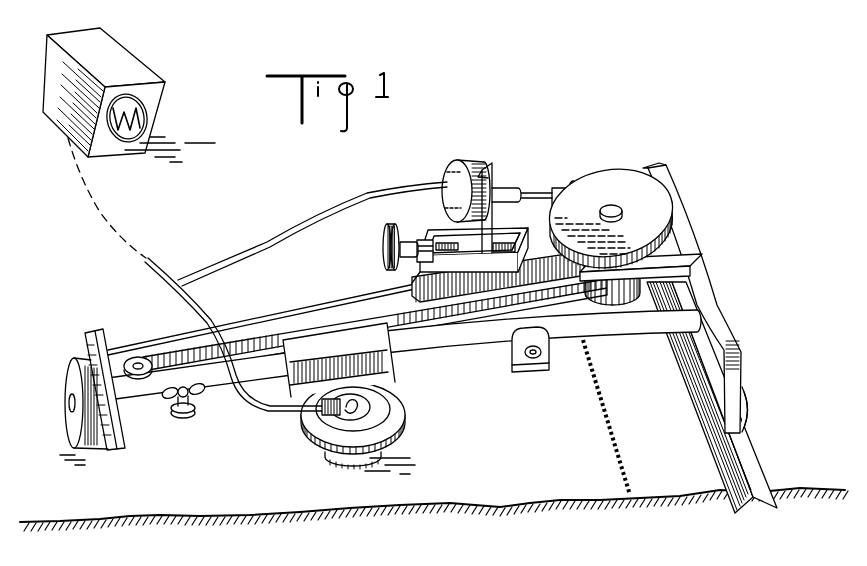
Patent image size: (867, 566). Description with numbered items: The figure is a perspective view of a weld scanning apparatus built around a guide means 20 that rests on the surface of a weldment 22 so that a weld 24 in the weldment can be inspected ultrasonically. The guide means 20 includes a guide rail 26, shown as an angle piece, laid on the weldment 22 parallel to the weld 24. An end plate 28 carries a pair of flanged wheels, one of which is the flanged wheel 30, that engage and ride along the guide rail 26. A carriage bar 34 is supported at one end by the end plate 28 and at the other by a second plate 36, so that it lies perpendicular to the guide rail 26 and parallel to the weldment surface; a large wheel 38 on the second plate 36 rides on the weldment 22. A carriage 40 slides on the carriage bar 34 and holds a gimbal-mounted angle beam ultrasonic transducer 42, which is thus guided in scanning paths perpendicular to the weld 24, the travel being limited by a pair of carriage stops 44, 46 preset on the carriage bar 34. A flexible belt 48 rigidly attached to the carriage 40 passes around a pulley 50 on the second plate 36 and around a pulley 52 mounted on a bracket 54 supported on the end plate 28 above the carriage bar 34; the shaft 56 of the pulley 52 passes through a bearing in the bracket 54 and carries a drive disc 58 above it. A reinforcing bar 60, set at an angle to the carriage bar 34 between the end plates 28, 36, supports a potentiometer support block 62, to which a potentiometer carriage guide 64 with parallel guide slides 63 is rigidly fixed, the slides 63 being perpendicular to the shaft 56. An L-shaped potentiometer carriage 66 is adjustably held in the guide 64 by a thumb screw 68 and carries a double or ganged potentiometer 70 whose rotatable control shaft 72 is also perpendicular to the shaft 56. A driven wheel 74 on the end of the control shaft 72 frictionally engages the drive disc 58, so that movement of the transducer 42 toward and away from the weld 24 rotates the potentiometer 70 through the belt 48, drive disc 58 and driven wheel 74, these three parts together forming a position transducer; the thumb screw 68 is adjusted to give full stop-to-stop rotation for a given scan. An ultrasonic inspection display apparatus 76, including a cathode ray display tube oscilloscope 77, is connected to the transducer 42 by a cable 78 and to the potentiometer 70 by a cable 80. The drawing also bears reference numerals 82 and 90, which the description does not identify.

The guide means 20 is at (506, 433).
The weldment 22 is at (167, 523).
The weld 24 is at (613, 430).
The guide rail 26 is at (755, 468).
The end plate 28 is at (723, 330).
The flanged wheel 30 is at (743, 407).
The carriage bar 34 is at (442, 352).
The second plate 36 is at (87, 343).
The large wheel 38 is at (67, 375).
The carriage 40 is at (412, 428).
The angle beam ultrasonic transducer 42 is at (342, 460).
The carriage stop 44 is at (173, 410).
The carriage stop 46 is at (525, 363).
The flexible belt 48 is at (263, 333).
The pulley 50 is at (130, 357).
The pulley 52 is at (637, 303).
The bracket 54 is at (673, 257).
The shaft 56 is at (608, 207).
The drive disc 58 is at (658, 212).
The reinforcing bar 60 is at (320, 310).
The potentiometer support block 62 is at (408, 273).
The guide slides 63 is at (447, 237).
The potentiometer carriage guide 64 is at (533, 230).
The potentiometer carriage 66 is at (493, 176).
The thumb screw 68 is at (382, 247).
The double or ganged potentiometer 70 is at (450, 182).
The control shaft 72 is at (533, 190).
The driven wheel 74 is at (575, 181).
The ultrasonic inspection display apparatus 76 is at (135, 50).
The cathode ray display tube oscilloscope 77 is at (147, 98).
The cable 78 is at (250, 400).
The cable 80 is at (278, 246).
The pointer 82 is at (132, 128).
The cutting assembly 90 is at (620, 162).